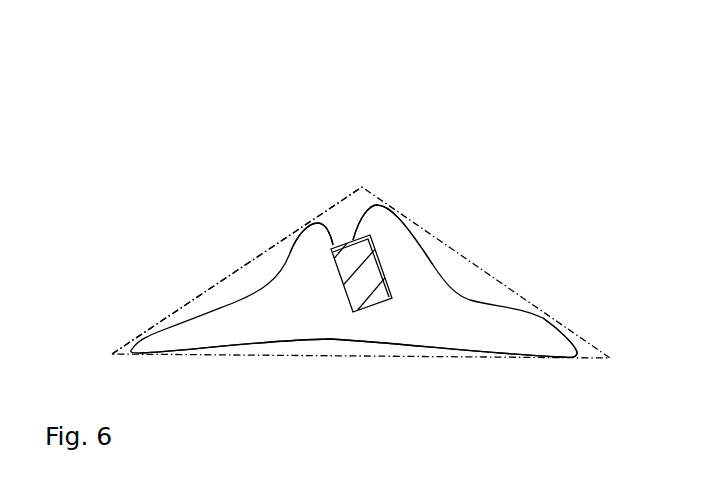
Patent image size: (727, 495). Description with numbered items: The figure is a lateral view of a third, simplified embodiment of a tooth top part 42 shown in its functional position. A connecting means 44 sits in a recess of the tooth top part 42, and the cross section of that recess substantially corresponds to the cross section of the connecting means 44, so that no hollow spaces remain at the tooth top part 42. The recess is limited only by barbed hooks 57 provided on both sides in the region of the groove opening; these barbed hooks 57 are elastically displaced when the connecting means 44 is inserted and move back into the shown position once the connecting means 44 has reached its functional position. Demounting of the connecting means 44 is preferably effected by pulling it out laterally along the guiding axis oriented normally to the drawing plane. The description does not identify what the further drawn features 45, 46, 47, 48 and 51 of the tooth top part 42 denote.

The tooth top part 42 is at (398, 156).
The connecting means 44 is at (355, 267).
The lower surface 45 is at (317, 338).
The leading edge portion 46 is at (222, 313).
The trailing edge portion 47 is at (544, 318).
The rear flank 48 is at (438, 312).
The envelope line 51 is at (237, 268).
The barbed hooks 57 is at (333, 242).